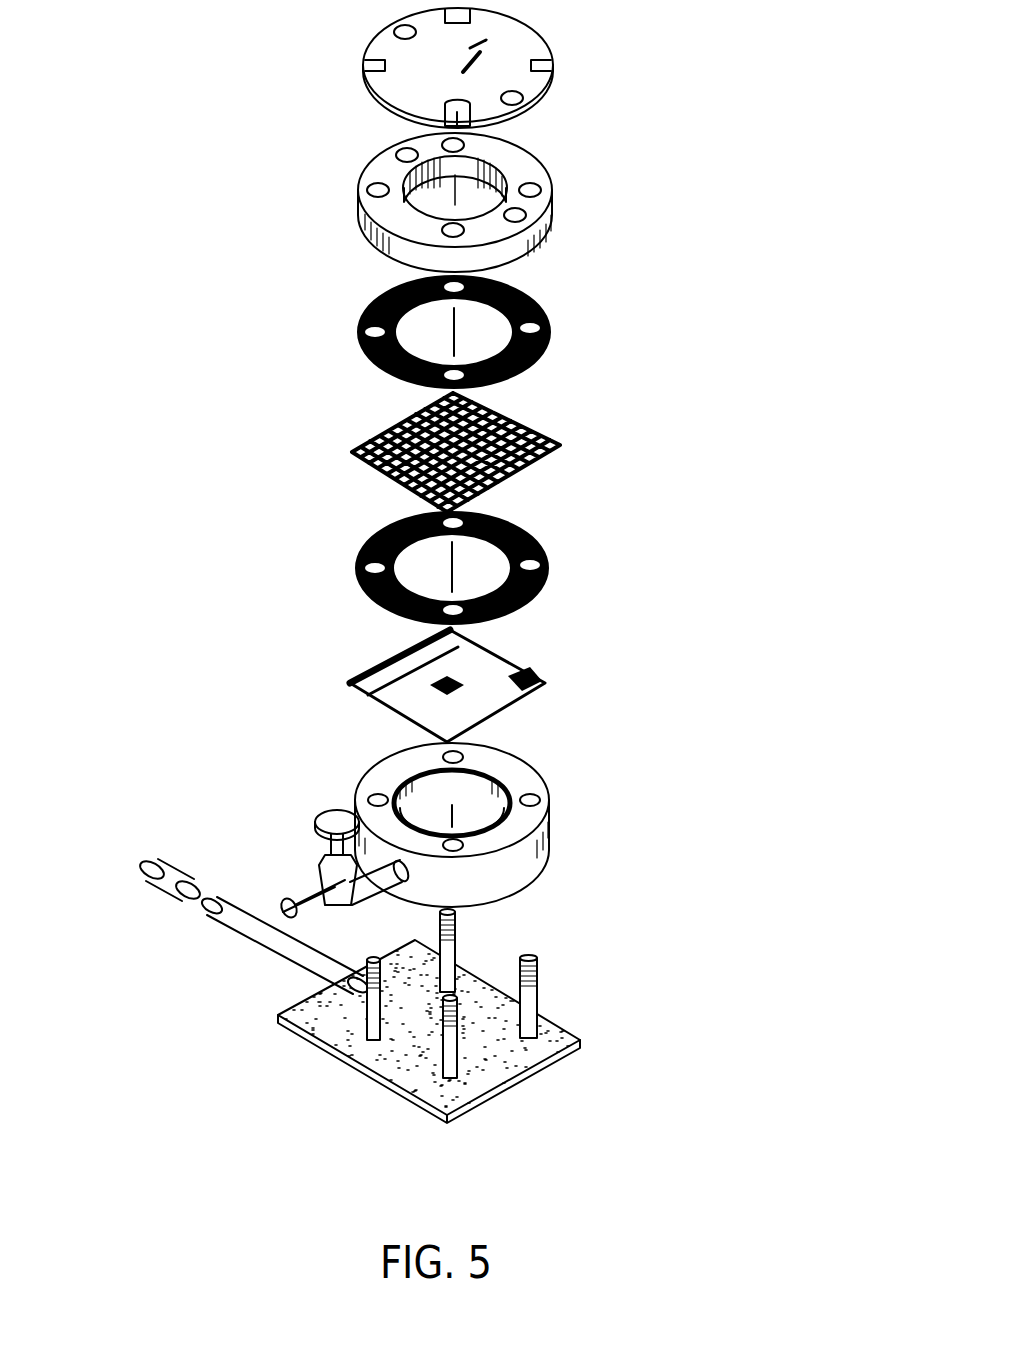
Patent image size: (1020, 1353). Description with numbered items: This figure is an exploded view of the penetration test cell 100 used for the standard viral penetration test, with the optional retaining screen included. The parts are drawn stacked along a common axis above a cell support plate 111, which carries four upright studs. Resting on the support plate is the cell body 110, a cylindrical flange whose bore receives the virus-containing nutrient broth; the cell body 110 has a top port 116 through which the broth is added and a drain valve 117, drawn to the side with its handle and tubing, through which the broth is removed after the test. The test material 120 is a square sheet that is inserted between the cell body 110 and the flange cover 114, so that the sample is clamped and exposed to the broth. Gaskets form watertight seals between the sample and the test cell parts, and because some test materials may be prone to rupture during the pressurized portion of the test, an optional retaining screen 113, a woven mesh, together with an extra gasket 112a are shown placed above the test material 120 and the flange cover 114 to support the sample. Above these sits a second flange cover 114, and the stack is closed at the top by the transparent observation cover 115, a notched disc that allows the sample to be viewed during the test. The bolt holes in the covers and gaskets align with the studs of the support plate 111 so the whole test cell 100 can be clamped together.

The test cell 100 is at (225, 227).
The cell body 110 is at (565, 853).
The cell support plate 111 is at (565, 993).
The extra gasket 112a is at (568, 338).
The retaining screen 113 is at (568, 465).
The flange cover 114 is at (570, 190).
The transparent observation cover 115 is at (572, 63).
The top port 116 is at (553, 780).
The drain valve 117 is at (308, 812).
The test material 120 is at (570, 663).